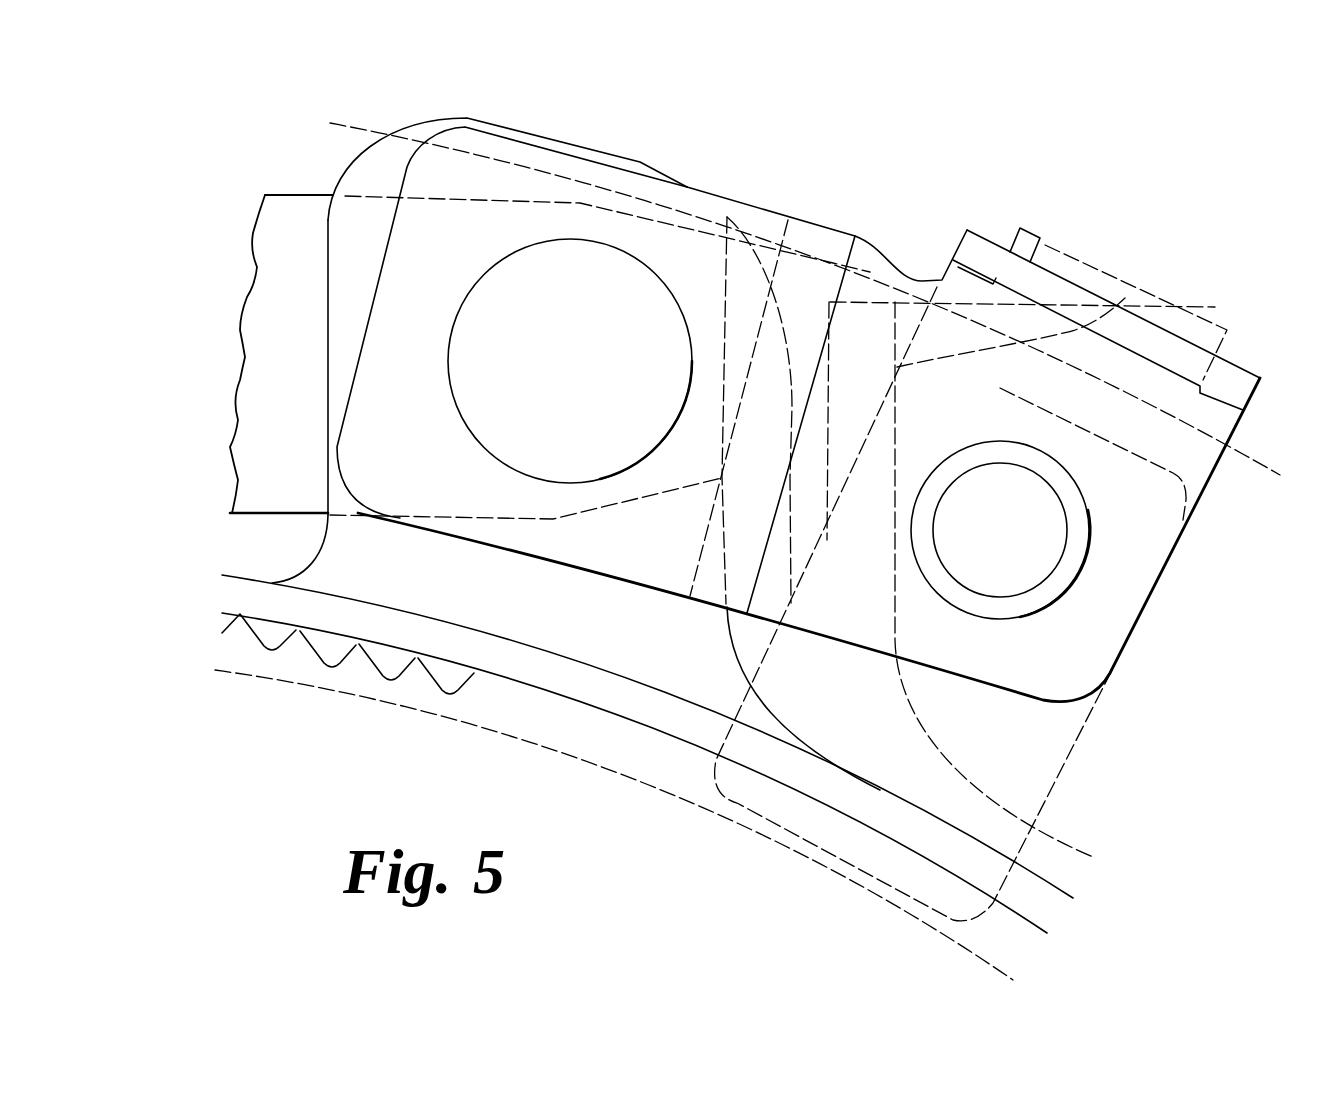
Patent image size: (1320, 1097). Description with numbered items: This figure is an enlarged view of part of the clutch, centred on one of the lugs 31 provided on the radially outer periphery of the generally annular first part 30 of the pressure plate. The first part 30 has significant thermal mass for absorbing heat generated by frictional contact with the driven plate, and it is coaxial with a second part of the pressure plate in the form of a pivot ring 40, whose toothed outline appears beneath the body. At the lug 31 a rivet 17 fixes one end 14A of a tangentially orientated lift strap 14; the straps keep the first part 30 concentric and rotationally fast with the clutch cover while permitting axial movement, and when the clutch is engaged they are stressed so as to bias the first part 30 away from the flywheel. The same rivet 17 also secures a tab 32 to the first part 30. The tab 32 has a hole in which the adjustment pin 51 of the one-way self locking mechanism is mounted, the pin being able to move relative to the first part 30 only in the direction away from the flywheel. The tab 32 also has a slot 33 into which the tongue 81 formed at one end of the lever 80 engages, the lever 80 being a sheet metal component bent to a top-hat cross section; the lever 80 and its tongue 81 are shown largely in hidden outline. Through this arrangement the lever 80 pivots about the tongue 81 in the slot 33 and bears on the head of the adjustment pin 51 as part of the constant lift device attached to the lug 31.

The lift strap 14 is at (296, 425).
The end of lift strap 14A is at (300, 210).
The rivet 17 is at (584, 367).
The first part 30 is at (332, 612).
The lug 31 is at (389, 158).
The tab 32 is at (770, 210).
The slot 33 is at (1013, 269).
The pivot ring 40 is at (417, 692).
The adjustment pin 51 is at (1019, 549).
The lever 80 is at (1085, 726).
The tongue 81 is at (1077, 267).